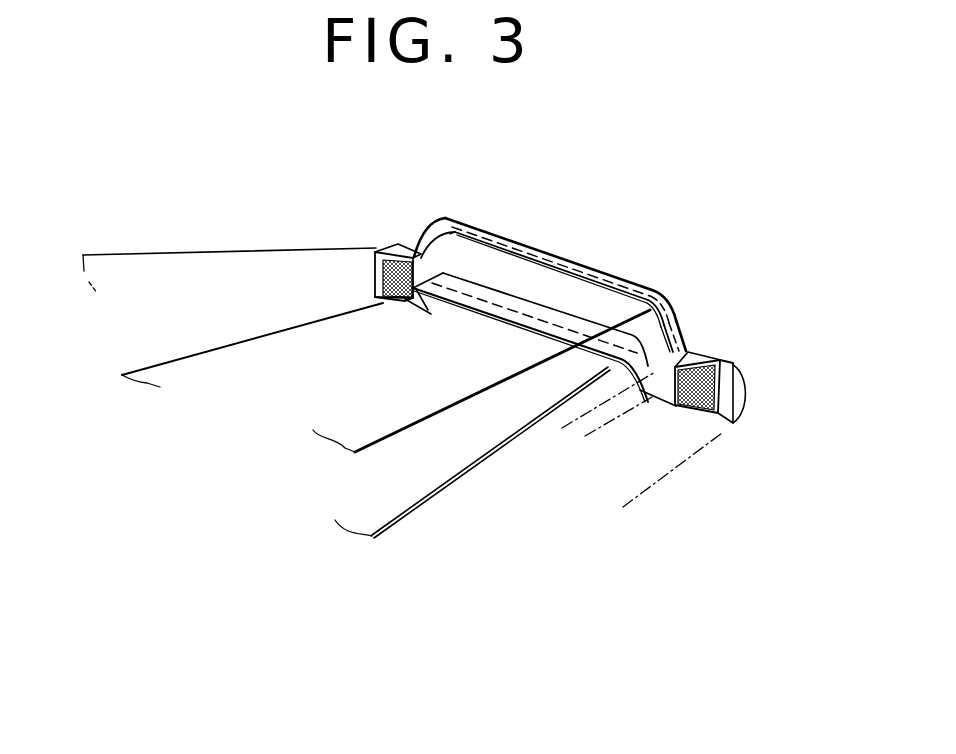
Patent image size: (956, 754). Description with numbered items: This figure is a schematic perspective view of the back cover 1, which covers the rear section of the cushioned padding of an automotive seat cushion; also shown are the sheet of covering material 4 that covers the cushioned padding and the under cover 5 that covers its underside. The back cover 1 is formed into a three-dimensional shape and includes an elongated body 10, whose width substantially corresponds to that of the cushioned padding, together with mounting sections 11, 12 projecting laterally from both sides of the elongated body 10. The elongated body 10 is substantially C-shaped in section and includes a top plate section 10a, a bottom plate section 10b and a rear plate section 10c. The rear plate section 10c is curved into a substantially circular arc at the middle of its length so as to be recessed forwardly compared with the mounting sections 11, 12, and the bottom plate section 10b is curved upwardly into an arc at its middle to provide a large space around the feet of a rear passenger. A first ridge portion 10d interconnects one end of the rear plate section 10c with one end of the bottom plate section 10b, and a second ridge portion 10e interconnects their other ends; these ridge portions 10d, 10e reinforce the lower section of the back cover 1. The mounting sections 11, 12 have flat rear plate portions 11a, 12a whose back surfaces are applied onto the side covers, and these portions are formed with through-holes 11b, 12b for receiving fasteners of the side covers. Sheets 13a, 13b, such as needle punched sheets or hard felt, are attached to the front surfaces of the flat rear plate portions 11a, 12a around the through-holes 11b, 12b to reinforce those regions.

The back cover 1 is at (538, 346).
The covering sheet 4 is at (233, 250).
The under cover 5 is at (440, 490).
The elongated body 10 is at (583, 280).
The top plate section 10a is at (650, 293).
The bottom plate section 10b is at (533, 310).
The rear plate section 10c is at (508, 286).
The first ridge portion 10d is at (677, 350).
The second ridge portion 10e is at (428, 305).
The mounting section 11 is at (725, 453).
The flat rear plate portion 11a is at (716, 430).
The through-hole 11b is at (672, 405).
The mounting section 12 is at (345, 263).
The flat rear plate portion 12a is at (377, 297).
The through-hole 12b is at (385, 303).
The sheet 13a is at (718, 395).
The sheet 13b is at (373, 277).